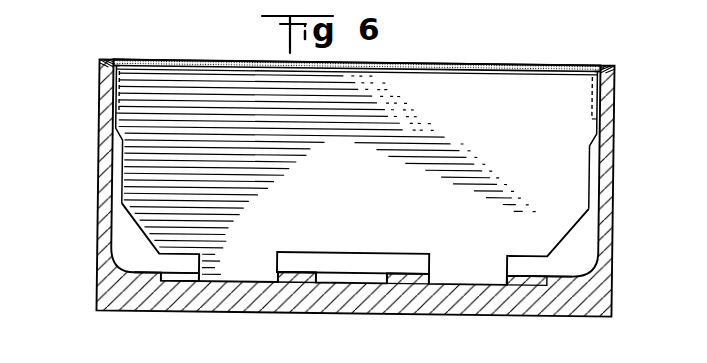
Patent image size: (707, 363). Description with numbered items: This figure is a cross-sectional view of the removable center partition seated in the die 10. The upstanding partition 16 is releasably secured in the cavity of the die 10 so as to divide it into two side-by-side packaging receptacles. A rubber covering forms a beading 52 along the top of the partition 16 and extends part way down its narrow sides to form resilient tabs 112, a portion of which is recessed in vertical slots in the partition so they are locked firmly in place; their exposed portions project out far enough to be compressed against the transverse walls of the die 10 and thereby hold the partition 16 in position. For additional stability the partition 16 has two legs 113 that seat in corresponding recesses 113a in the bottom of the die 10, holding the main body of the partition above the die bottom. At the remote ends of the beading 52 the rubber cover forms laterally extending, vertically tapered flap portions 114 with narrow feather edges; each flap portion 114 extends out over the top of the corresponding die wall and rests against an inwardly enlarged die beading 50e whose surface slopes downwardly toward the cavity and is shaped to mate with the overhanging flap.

The die 10 is at (96, 255).
The partition 16 is at (361, 190).
The beading 52 is at (463, 65).
The beading 50e is at (106, 66).
The resilient tabs 112 is at (117, 104).
The legs 113 is at (250, 270).
The recesses 113a is at (300, 279).
The flap portions 114 is at (110, 65).